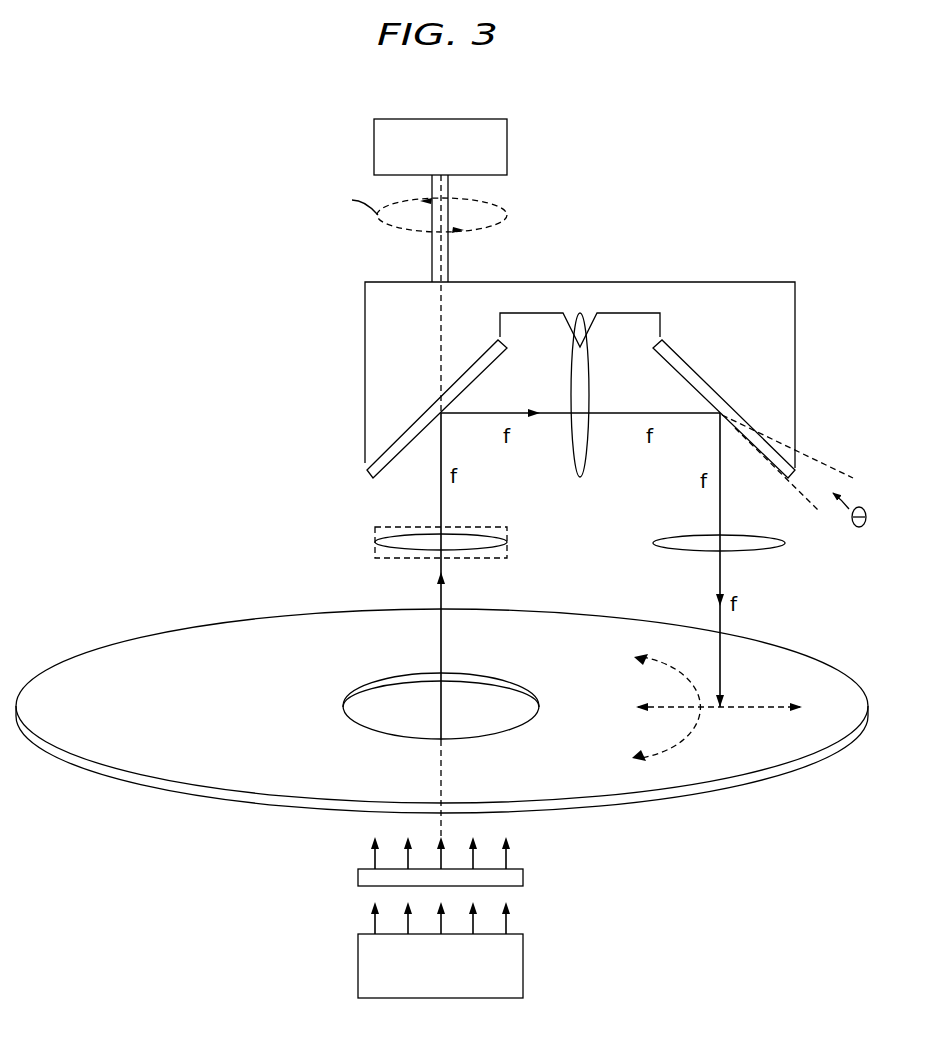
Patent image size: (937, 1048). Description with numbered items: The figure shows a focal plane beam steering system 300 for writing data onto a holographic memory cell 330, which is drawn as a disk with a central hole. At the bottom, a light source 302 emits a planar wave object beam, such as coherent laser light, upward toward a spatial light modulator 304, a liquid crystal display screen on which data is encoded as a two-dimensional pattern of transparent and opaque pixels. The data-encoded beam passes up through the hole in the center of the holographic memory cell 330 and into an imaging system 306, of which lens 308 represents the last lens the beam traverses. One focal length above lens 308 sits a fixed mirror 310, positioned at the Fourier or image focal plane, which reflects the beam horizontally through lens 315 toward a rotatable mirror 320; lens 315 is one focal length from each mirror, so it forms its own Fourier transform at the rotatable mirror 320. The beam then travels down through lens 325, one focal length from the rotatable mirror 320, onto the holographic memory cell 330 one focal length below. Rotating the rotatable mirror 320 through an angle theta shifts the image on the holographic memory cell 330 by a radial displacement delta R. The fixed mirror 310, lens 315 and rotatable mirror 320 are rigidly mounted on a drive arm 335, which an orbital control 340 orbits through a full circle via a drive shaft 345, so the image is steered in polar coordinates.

The focal plane beam steering system 300 is at (150, 105).
The light source 302 is at (523, 966).
The spatial light modulator 304 is at (523, 878).
The imaging system 306 is at (375, 531).
The lens 308 is at (375, 545).
The fixed mirror 310 is at (490, 362).
The lens 315 is at (578, 480).
The rotatable mirror 320 is at (668, 363).
The lens 325 is at (655, 543).
The holographic memory cell 330 is at (252, 798).
The drive arm 335 is at (648, 281).
The orbital control 340 is at (508, 150).
The drive shaft 345 is at (432, 262).